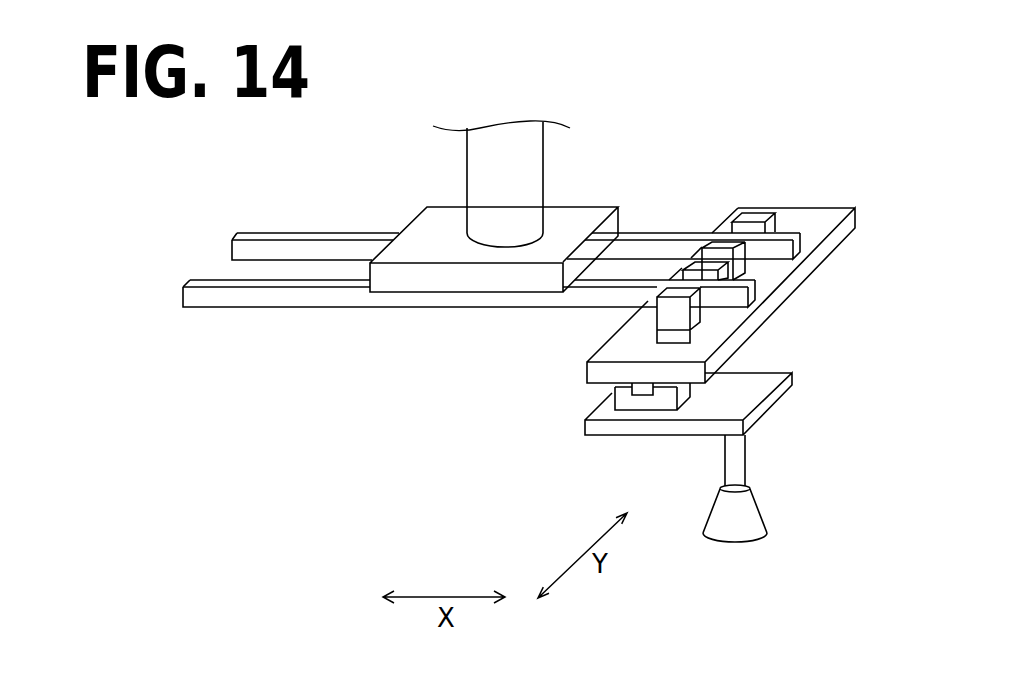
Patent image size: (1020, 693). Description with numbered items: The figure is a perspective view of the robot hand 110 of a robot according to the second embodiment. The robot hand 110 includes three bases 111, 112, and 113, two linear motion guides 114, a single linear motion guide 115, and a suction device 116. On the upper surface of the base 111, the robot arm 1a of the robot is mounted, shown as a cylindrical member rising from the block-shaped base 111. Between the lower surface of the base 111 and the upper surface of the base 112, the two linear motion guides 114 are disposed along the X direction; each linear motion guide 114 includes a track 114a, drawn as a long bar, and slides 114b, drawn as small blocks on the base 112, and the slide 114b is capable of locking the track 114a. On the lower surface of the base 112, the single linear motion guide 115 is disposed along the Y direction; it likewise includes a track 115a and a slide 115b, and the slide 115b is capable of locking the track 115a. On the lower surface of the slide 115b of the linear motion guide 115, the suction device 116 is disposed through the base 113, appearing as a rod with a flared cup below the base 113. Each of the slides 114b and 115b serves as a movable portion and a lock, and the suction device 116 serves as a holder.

The robot arm 1a is at (527, 168).
The robot hand 110 is at (688, 112).
The base 111 is at (593, 213).
The base 112 is at (795, 217).
The base 113 is at (772, 383).
The linear motion guide 114 is at (468, 270).
The track 114a is at (303, 236).
The slide 114b is at (752, 220).
The linear motion guide 115 is at (583, 441).
The track 115a is at (628, 388).
The slide 115b is at (625, 398).
The suction device 116 is at (752, 516).